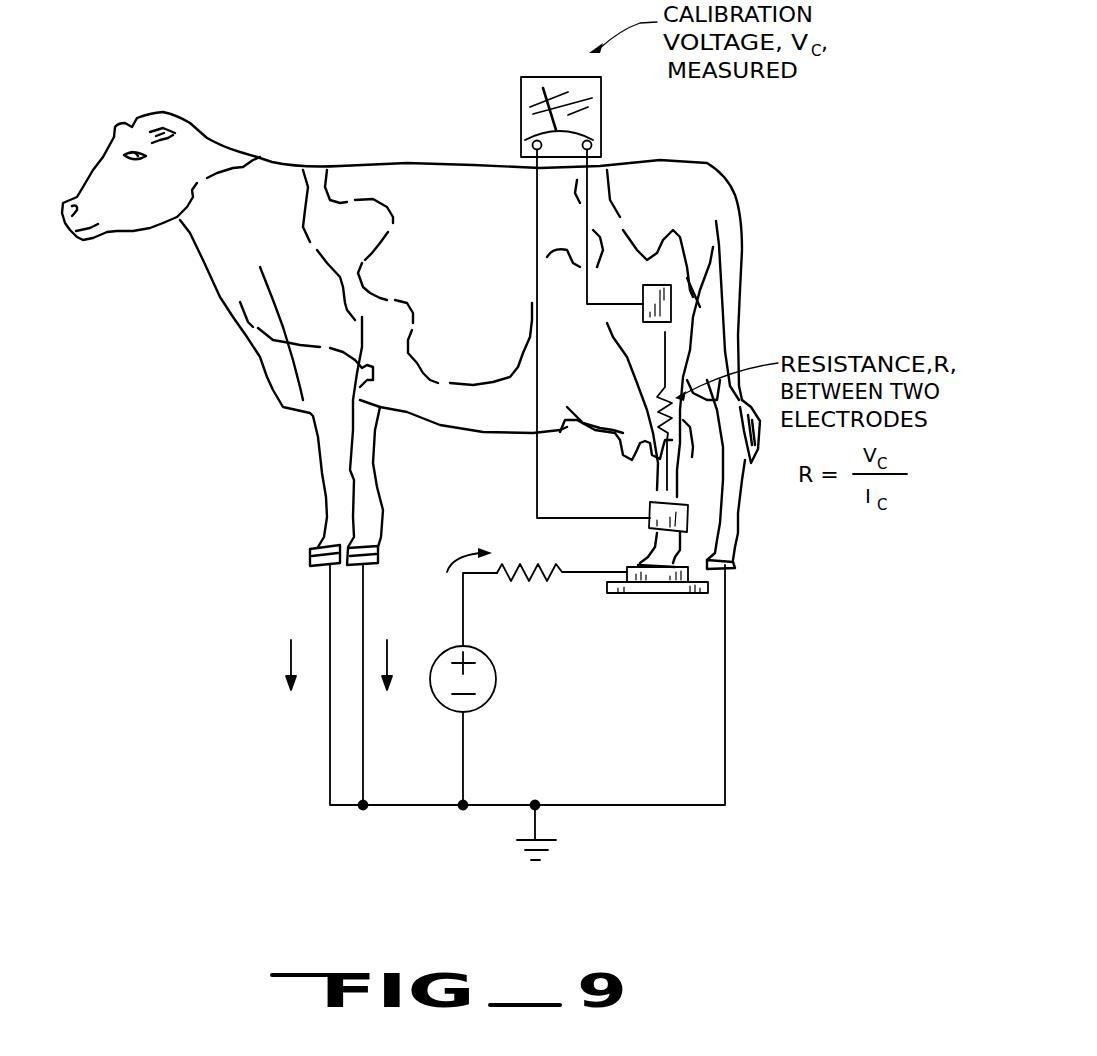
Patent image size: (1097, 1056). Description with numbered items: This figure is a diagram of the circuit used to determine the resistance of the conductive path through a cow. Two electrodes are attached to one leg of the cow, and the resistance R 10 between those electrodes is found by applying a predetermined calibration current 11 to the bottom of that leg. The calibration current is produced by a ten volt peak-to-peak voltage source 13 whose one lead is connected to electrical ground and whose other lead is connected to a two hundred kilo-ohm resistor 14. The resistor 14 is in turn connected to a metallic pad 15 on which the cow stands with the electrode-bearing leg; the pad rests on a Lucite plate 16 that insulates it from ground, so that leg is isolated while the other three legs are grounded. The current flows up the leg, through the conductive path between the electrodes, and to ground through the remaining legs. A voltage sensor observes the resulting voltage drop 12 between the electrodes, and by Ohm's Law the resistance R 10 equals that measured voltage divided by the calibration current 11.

The resistance R between the two electrodes 10 is at (657, 384).
The calibration current 11 is at (444, 591).
The calibration voltage between the two electrodes 12 is at (533, 53).
The voltage source 13 is at (487, 706).
The resistor 14 is at (508, 556).
The metallic pad 15 is at (636, 556).
The Lucite plate 16 is at (648, 597).